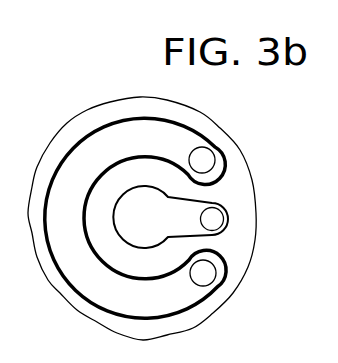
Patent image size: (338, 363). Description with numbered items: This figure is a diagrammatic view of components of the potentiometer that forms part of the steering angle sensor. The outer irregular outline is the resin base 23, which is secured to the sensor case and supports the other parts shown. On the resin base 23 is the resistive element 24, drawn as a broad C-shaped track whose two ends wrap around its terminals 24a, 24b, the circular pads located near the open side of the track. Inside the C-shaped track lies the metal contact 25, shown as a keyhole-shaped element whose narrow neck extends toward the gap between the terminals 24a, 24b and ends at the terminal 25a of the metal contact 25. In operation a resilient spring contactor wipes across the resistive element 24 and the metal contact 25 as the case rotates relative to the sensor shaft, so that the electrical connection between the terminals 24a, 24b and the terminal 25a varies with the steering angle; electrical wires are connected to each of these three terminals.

The resin base 23 is at (245, 153).
The resistive element 24 is at (150, 136).
The terminal of the resistive element 24a is at (203, 158).
The terminal of the resistive element 24b is at (205, 275).
The metal contact 25 is at (188, 212).
The terminal of the metal contact 25a is at (218, 220).